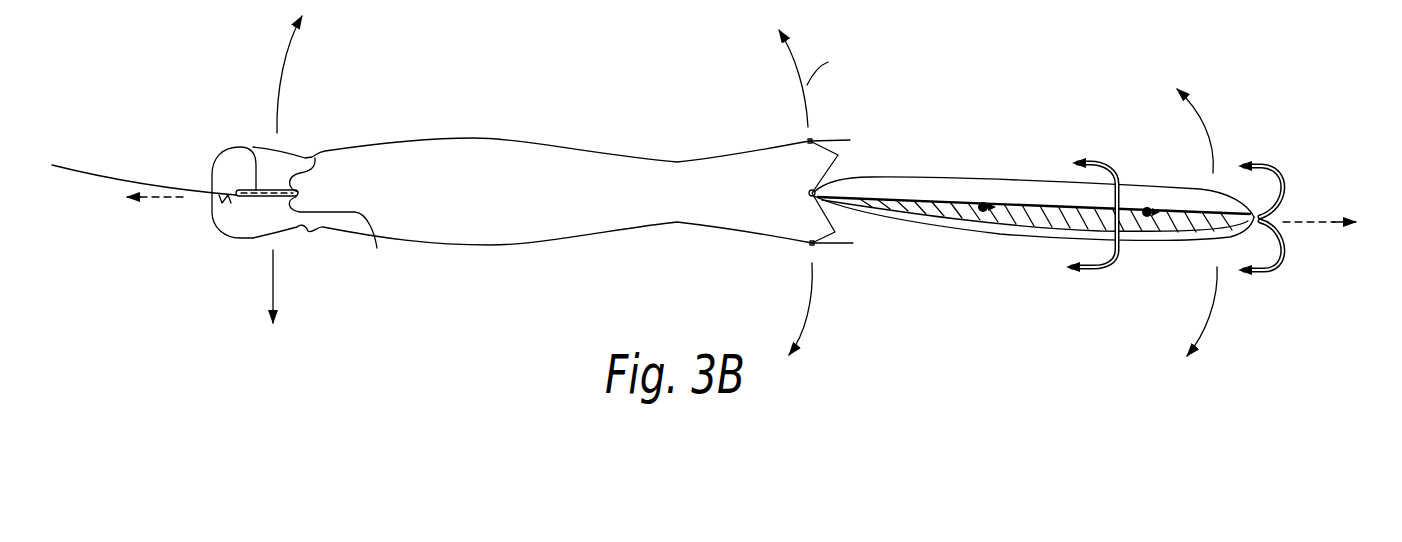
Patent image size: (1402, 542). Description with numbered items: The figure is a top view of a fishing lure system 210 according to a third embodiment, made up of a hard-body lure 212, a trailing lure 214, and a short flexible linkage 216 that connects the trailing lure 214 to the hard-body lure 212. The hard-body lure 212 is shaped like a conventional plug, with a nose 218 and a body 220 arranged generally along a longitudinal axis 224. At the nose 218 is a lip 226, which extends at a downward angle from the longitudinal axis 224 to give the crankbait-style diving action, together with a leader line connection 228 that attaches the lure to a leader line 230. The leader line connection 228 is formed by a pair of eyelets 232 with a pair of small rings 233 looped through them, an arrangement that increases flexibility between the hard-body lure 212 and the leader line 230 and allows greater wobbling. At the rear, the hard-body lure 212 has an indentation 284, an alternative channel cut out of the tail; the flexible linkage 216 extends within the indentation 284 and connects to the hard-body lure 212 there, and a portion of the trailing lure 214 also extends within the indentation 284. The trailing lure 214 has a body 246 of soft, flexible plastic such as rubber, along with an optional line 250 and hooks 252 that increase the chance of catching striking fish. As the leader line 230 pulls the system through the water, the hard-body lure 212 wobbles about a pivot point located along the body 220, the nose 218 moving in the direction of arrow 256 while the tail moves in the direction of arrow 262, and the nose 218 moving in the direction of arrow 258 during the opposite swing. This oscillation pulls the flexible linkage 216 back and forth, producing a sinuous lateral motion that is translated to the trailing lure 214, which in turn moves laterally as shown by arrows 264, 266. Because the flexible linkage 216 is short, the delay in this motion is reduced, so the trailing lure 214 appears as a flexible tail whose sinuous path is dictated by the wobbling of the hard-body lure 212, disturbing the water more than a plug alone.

The fishing lure system 210 is at (565, 376).
The hard-body lure 212 is at (535, 293).
The trailing lure 214 is at (1110, 280).
The flexible linkage 216 is at (851, 162).
The nose 218 is at (290, 242).
The body 220 is at (437, 255).
The longitudinal axis 224 is at (174, 198).
The lip 226 is at (308, 165).
The leader line connection 228 is at (250, 224).
The leader line 230 is at (78, 170).
The eyelets 232 is at (316, 158).
The small rings 233 is at (253, 147).
The body 246 is at (1193, 202).
The line 250 is at (937, 208).
The hooks 252 is at (1087, 272).
The arrow 256 is at (288, 50).
The arrow 258 is at (276, 292).
The arrow 262 is at (811, 310).
The arrow 264 is at (1208, 115).
The arrow 266 is at (1220, 305).
The indentation 284 is at (818, 218).